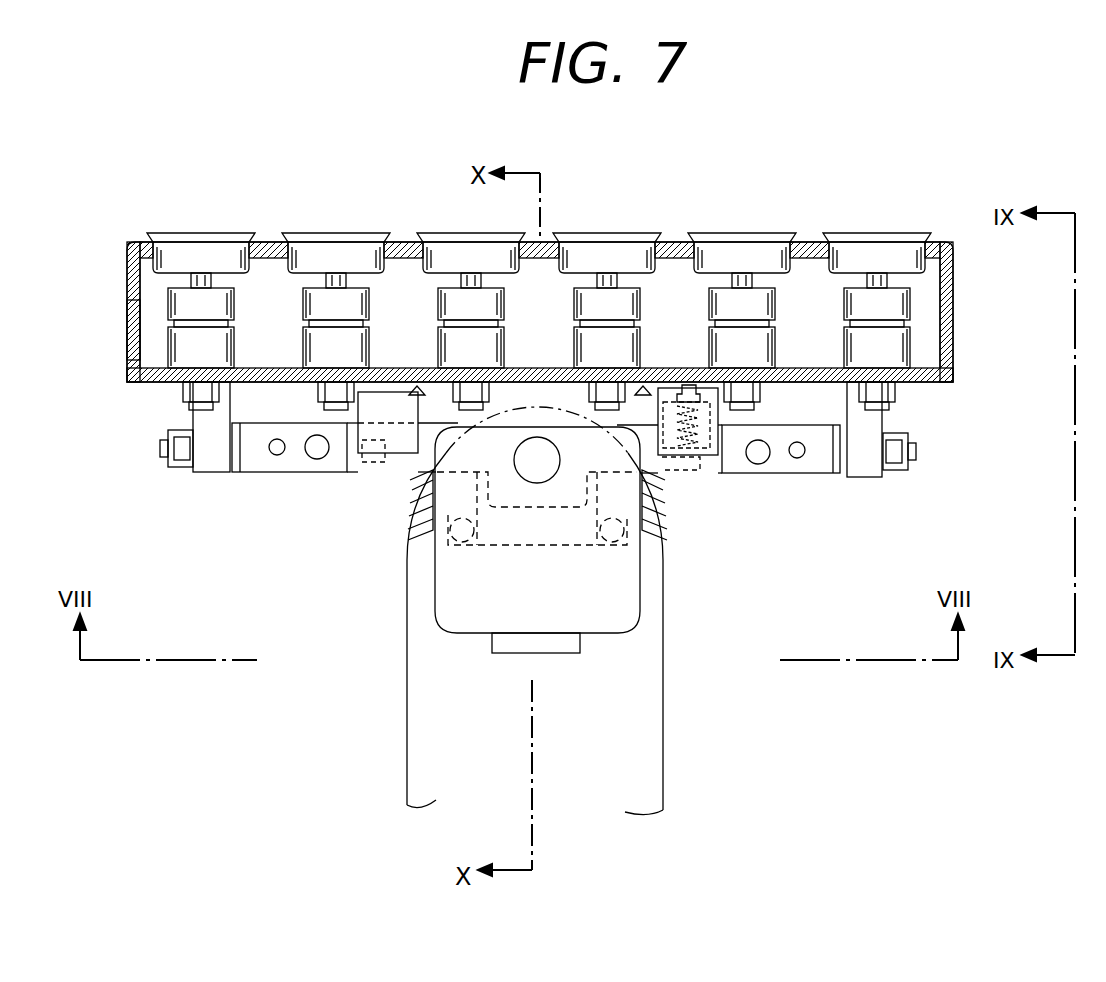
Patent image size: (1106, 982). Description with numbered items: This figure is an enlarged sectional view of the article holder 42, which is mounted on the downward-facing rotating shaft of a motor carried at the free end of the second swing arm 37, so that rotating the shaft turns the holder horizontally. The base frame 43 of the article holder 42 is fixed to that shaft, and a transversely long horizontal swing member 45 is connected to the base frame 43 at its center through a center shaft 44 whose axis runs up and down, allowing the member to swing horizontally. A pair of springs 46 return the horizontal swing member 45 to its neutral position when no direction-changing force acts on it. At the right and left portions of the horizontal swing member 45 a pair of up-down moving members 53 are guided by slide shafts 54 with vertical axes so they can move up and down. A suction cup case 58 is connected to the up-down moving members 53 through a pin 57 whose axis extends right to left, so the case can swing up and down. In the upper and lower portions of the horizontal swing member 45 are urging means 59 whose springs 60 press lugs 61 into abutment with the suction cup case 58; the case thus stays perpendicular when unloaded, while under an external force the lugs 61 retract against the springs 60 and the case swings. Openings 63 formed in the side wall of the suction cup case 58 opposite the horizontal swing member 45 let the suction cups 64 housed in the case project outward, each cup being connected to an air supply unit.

The second swing arm 37 is at (663, 660).
The article holder 42 is at (955, 351).
The base frame 43 is at (453, 605).
The center shaft 44 is at (537, 468).
The horizontal swing member 45 is at (358, 457).
The springs 46 is at (420, 502).
The up-down moving members 53 is at (260, 472).
The slide shafts 54 is at (315, 455).
The pin 57 is at (170, 447).
The suction cup case 58 is at (127, 330).
The urging means 59 is at (400, 410).
The springs 60 is at (665, 398).
The lugs 61 is at (689, 385).
The openings 63 is at (260, 242).
The suction cups 64 is at (217, 255).